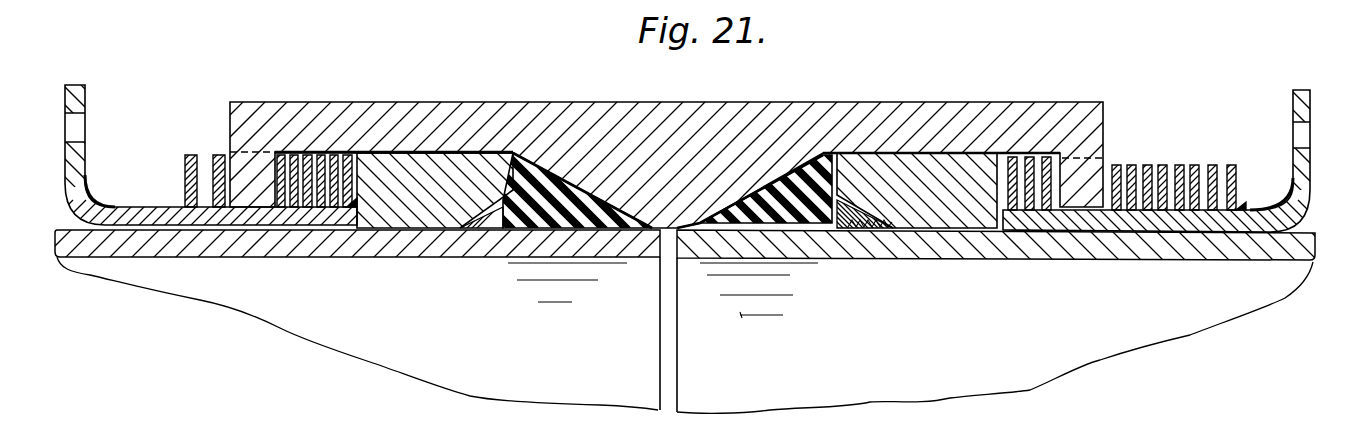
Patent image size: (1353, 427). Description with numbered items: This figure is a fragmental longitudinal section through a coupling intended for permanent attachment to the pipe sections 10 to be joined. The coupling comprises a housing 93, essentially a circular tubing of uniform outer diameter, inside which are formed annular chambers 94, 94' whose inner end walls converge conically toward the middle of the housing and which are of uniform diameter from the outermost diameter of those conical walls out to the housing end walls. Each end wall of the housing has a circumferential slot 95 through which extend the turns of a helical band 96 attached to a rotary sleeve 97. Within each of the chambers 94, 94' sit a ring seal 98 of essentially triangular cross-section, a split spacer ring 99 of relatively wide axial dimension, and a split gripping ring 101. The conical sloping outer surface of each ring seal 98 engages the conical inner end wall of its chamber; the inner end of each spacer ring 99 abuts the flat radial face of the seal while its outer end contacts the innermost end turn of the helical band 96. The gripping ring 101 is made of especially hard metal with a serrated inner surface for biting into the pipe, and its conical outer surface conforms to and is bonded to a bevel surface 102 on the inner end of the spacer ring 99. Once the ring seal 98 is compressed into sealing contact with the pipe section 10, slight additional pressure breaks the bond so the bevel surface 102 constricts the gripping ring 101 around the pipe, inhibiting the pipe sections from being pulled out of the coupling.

The pipe section 10 is at (267, 258).
The housing 93 is at (519, 103).
The annular chamber 94 is at (435, 146).
The annular chamber 94' is at (917, 146).
The circumferential slot 95 is at (250, 157).
The helical band 96 is at (300, 158).
The rotary sleeve 97 is at (86, 100).
The ring seal 98 is at (541, 172).
The split spacer ring 99 is at (470, 160).
The split gripping ring 101 is at (473, 232).
The bevel surface 102 is at (871, 232).